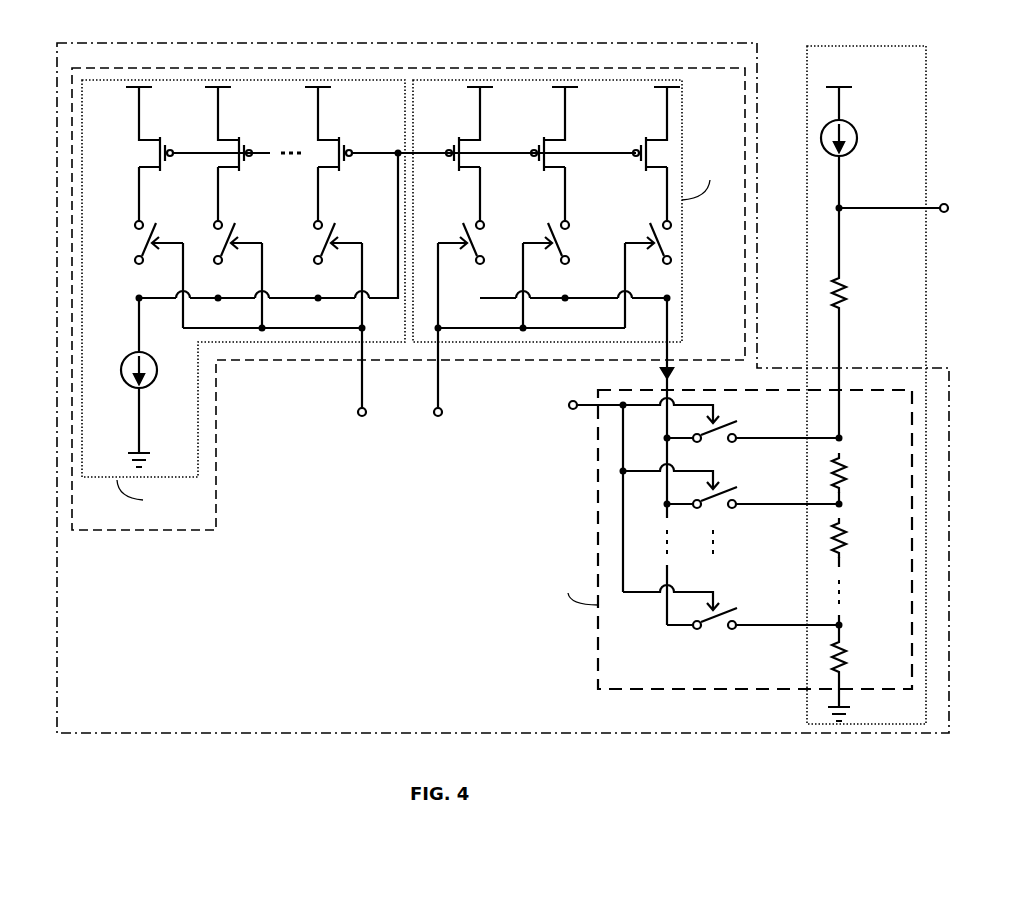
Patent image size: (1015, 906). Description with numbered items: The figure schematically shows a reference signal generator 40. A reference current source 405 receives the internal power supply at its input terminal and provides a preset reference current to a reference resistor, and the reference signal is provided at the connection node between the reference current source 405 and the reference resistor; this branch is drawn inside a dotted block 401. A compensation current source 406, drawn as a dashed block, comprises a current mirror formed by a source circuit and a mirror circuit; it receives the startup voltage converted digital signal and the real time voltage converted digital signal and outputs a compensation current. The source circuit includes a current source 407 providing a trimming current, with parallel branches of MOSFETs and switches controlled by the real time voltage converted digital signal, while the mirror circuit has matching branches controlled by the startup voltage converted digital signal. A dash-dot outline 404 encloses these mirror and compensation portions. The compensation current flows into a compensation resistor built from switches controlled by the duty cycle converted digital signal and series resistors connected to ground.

The reference signal generator 40 is at (948, 90).
The reference voltage generating unit 401 is at (926, 317).
The current mirror unit 404 is at (757, 175).
The reference current source 405 is at (890, 128).
The compensation current source 406 is at (216, 532).
The current source 407 is at (148, 388).